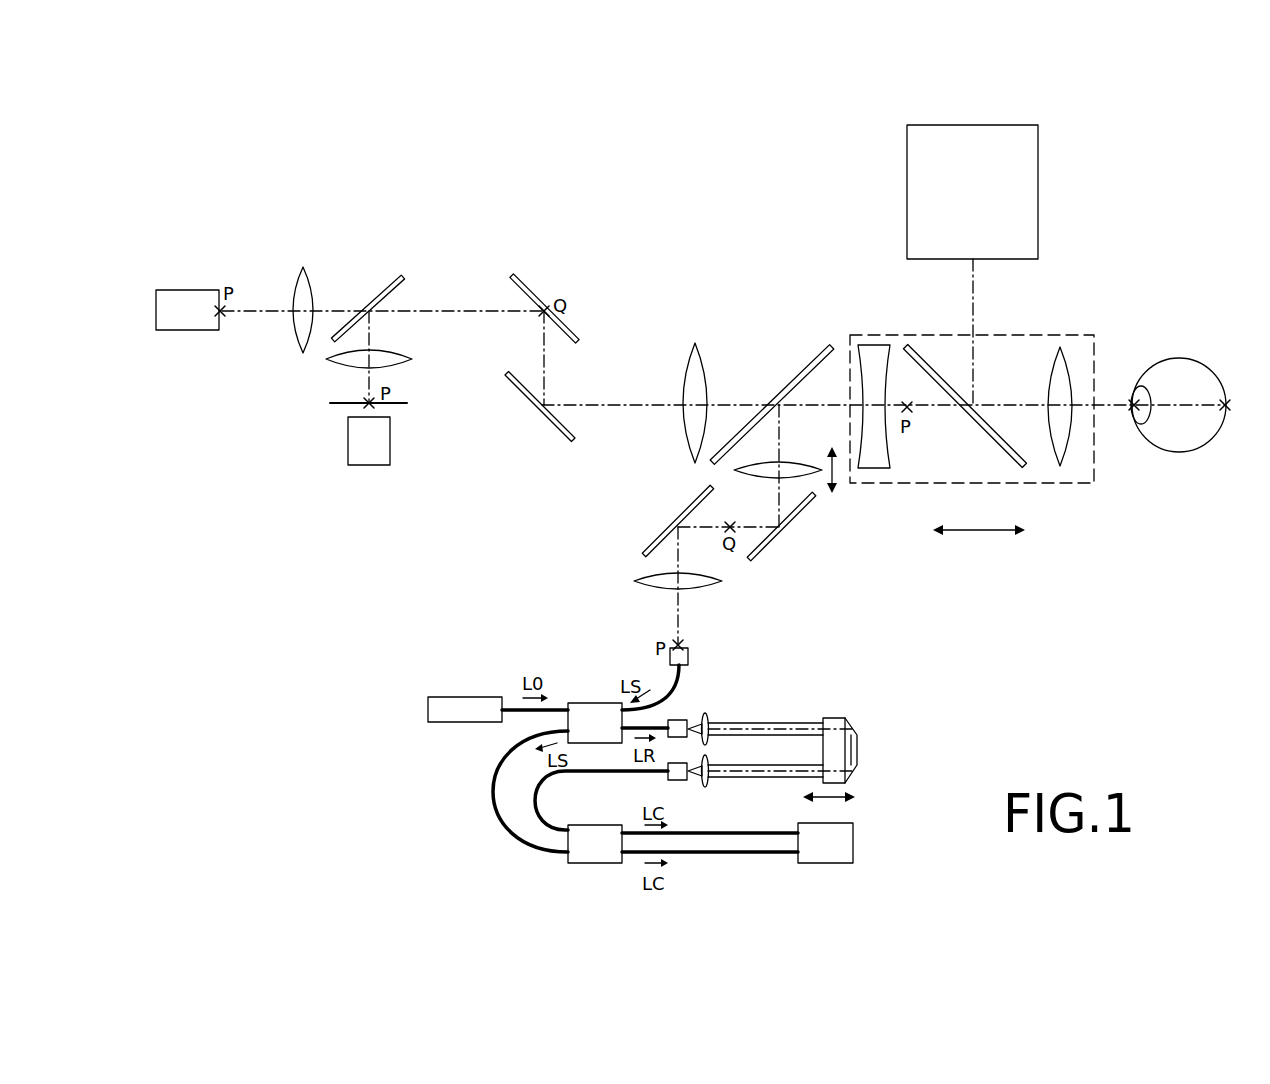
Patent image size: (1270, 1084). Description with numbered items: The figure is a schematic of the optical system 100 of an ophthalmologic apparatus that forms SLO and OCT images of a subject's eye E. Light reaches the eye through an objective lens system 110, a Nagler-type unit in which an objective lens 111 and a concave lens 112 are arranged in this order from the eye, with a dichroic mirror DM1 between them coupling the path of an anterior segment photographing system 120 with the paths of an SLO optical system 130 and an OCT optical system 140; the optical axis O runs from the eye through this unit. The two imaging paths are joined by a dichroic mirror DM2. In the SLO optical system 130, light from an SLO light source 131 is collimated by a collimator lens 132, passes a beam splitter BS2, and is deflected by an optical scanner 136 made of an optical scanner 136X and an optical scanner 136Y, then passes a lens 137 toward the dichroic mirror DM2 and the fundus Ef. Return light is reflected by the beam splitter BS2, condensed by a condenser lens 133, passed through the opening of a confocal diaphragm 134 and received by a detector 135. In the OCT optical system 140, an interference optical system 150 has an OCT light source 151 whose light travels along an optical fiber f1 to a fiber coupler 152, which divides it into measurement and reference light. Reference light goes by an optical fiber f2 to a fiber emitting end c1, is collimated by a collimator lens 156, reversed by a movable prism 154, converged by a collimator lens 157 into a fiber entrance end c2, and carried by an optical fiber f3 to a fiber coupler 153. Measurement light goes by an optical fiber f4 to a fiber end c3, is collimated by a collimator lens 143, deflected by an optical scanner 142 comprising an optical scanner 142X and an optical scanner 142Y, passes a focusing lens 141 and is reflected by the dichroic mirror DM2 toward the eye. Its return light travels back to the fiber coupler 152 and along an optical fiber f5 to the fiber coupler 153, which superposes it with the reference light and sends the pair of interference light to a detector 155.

The optical system 100 is at (500, 190).
The objective lens system 110 is at (1090, 335).
The objective lens 111 is at (1060, 467).
The concave lens 112 is at (874, 469).
The anterior segment photographing system 120 is at (1038, 125).
The SLO optical system 130 is at (490, 496).
The SLO light source 131 is at (188, 288).
The collimator lens 132 is at (303, 265).
The condenser lens 133 is at (326, 360).
The confocal diaphragm 134 is at (332, 404).
The detector 135 is at (372, 466).
The optical scanner 136 is at (550, 342).
The optical scanner 136X is at (548, 290).
The optical scanner 136Y is at (522, 392).
The lens 137 is at (695, 342).
The OCT optical system 140 is at (545, 598).
The focusing lens 141 is at (734, 470).
The optical scanner 142 is at (695, 554).
The optical scanner 142X is at (646, 548).
The optical scanner 142Y is at (778, 536).
The collimator lens 143 is at (634, 581).
The interference optical system 150 is at (437, 793).
The OCT light source 151 is at (466, 696).
The fiber coupler 152 is at (594, 702).
The fiber coupler 153 is at (594, 864).
The prism 154 is at (847, 750).
The detector 155 is at (828, 864).
The collimator lens 156 is at (706, 714).
The collimator lens 157 is at (706, 786).
The beam splitter BS2 is at (392, 277).
The dichroic mirror DM1 is at (986, 450).
The dichroic mirror DM2 is at (805, 356).
The subject's eye E is at (1186, 360).
The fundus Ef is at (1228, 398).
The optical axis O is at (1107, 407).
The fiber emitting end c1 is at (678, 718).
The fiber entrance end c2 is at (678, 762).
The fiber end c3 is at (691, 659).
The optical fiber f1 is at (535, 723).
The optical fiber f2 is at (645, 720).
The optical fiber f3 is at (601, 800).
The optical fiber f4 is at (661, 687).
The optical fiber f5 is at (519, 791).